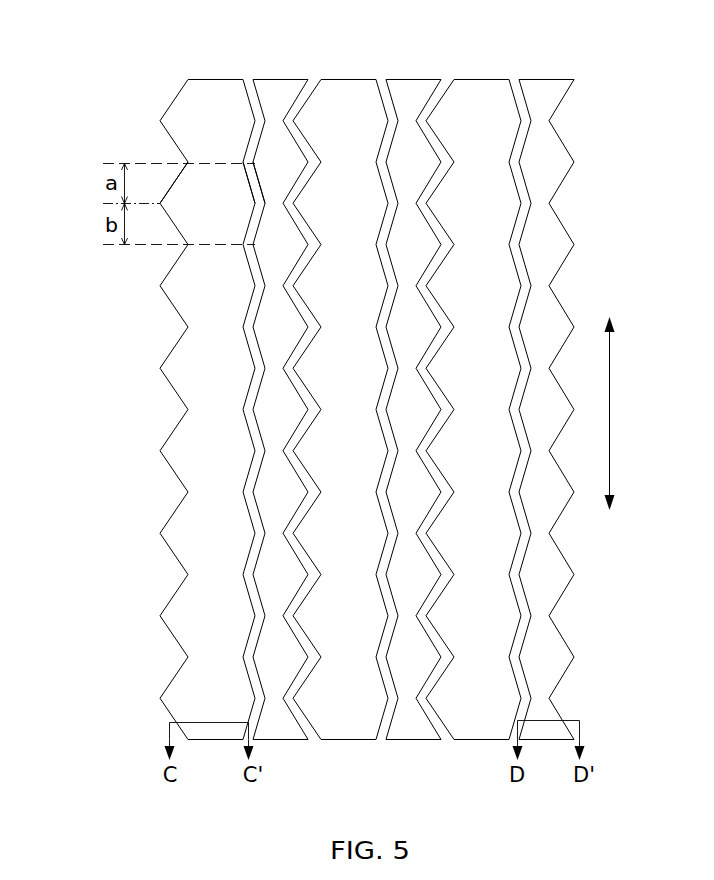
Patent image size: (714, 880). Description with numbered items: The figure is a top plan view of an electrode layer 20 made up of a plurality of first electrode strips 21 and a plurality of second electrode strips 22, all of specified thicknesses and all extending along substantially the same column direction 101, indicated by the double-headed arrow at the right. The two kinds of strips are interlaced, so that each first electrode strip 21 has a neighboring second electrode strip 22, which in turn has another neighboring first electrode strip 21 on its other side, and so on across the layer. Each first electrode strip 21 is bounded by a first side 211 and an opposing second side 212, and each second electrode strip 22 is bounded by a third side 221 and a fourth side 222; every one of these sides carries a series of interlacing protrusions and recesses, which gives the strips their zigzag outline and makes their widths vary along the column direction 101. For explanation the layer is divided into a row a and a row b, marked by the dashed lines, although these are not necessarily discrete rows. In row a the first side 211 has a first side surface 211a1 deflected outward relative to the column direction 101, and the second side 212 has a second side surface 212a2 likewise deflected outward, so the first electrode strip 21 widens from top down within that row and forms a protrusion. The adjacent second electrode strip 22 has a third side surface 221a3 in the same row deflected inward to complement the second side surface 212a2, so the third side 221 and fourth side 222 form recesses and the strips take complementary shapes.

The electrode layer 20 is at (170, 22).
The first electrode strip 21 is at (228, 88).
The second electrode strip 22 is at (282, 88).
The first side 211 is at (173, 472).
The second side 212 is at (247, 513).
The third side 221 is at (257, 344).
The fourth side 222 is at (293, 394).
The first side surface 211a1 is at (172, 184).
The second side surface 212a2 is at (248, 184).
The third side surface 221a3 is at (260, 189).
The column direction 101 is at (630, 413).